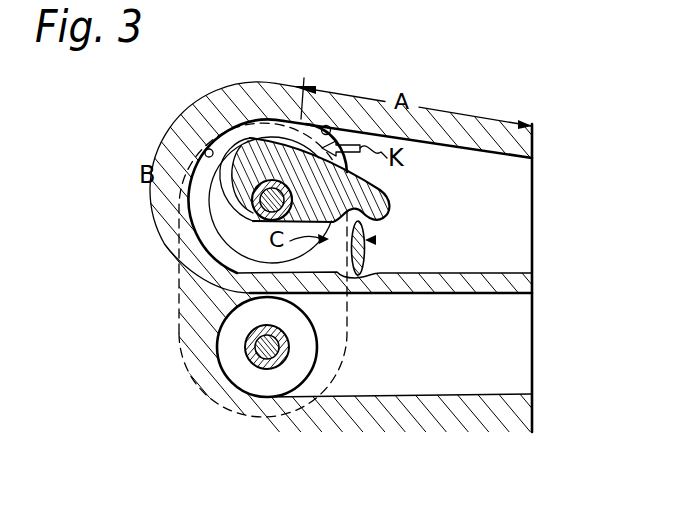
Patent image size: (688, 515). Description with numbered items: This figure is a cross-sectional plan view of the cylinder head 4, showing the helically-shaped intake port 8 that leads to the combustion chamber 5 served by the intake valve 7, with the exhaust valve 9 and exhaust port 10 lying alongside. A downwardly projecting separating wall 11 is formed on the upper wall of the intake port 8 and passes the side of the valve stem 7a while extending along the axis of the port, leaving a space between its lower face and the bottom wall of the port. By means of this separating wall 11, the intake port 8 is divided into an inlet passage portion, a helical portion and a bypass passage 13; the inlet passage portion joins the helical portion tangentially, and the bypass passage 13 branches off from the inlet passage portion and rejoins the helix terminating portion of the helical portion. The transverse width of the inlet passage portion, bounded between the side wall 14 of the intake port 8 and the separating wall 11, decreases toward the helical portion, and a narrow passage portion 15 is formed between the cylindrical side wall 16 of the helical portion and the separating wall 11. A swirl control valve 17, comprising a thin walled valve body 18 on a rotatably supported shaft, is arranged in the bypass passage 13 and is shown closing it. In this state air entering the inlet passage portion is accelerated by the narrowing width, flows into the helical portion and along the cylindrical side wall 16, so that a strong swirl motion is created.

The cylinder head 4 is at (486, 139).
The combustion chamber 5 is at (178, 321).
The intake valve 7 is at (222, 209).
The valve stem 7a is at (252, 214).
The helically-shaped intake port 8 is at (521, 201).
The exhaust valve 9 is at (243, 375).
The exhaust port 10 is at (423, 372).
The separating wall 11 is at (350, 173).
The bypass passage 13 is at (329, 256).
The side wall 14 is at (331, 126).
The narrow passage portion 15 is at (236, 130).
The cylindrical side wall 16 is at (153, 156).
The swirl control valve 17 is at (376, 240).
The thin walled valve body 18 is at (363, 262).